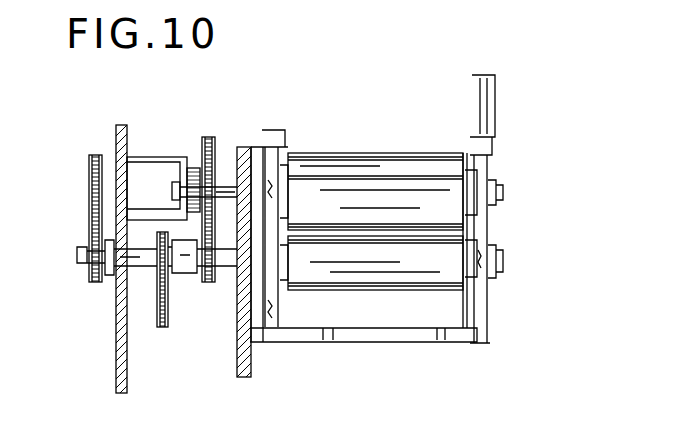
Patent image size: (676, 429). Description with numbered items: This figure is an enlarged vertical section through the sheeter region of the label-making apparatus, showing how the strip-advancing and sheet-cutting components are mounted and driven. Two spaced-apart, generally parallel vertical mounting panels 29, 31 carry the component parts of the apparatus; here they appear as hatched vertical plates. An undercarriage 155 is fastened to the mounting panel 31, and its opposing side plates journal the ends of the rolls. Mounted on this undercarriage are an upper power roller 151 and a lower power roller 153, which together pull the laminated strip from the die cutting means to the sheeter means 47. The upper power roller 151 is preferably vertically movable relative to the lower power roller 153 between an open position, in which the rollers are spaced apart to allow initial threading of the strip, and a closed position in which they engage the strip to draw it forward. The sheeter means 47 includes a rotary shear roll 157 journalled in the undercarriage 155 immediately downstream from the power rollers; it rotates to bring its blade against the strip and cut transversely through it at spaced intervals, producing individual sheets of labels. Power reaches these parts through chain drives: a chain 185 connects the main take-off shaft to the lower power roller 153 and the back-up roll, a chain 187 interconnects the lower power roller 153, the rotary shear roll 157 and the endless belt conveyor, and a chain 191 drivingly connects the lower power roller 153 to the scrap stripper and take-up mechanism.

The mounting panel 29 is at (138, 143).
The mounting panel 31 is at (232, 315).
The sheeter means 47 is at (410, 220).
The upper power roller 151 is at (452, 219).
The lower power roller 153 is at (355, 292).
The undercarriage 155 is at (487, 323).
The rotary shear roll 157 is at (457, 167).
The chain 185 is at (150, 320).
The chain 187 is at (225, 140).
The chain 191 is at (88, 170).